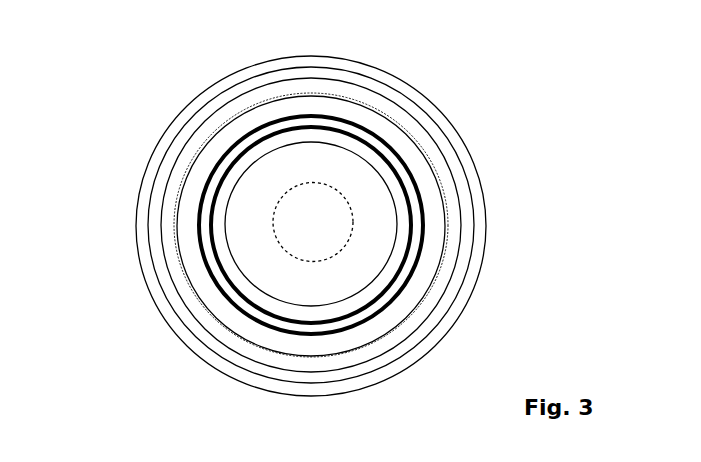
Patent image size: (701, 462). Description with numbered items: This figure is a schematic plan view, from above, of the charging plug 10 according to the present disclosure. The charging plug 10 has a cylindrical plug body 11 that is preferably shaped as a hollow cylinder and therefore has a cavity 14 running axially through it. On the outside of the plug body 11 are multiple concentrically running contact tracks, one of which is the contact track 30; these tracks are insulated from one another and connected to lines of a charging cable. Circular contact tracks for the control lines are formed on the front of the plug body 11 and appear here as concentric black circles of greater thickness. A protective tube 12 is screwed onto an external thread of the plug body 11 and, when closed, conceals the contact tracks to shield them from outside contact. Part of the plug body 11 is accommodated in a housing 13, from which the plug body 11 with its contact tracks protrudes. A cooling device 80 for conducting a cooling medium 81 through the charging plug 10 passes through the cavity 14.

The charging plug 10 is at (150, 87).
The plug body 11 is at (193, 247).
The protective tube 12 is at (143, 203).
The housing 13 is at (490, 248).
The cavity 14 is at (267, 273).
The contact track 30 is at (433, 170).
The cooling device 80 is at (343, 178).
The cooling medium 81 is at (300, 210).